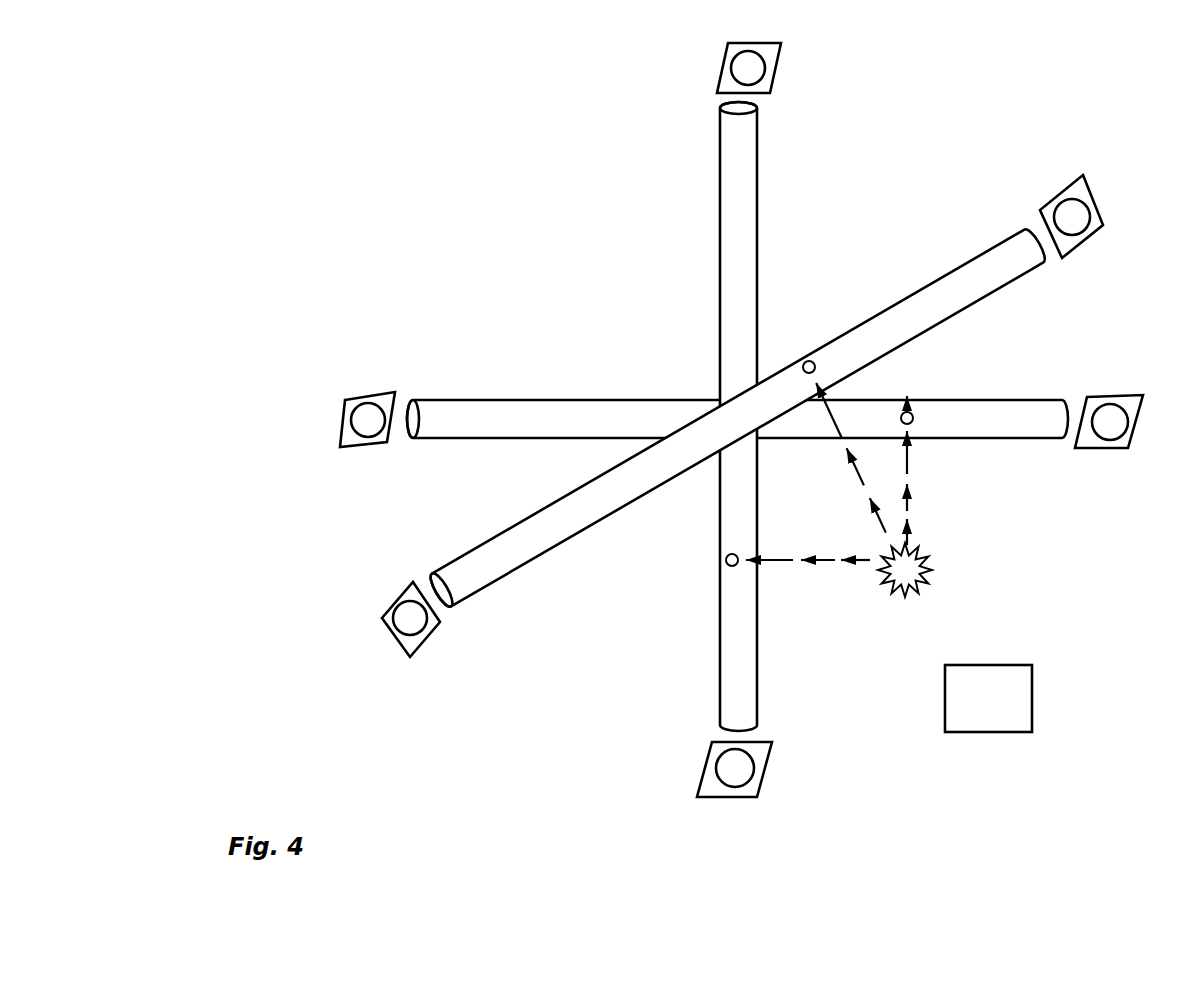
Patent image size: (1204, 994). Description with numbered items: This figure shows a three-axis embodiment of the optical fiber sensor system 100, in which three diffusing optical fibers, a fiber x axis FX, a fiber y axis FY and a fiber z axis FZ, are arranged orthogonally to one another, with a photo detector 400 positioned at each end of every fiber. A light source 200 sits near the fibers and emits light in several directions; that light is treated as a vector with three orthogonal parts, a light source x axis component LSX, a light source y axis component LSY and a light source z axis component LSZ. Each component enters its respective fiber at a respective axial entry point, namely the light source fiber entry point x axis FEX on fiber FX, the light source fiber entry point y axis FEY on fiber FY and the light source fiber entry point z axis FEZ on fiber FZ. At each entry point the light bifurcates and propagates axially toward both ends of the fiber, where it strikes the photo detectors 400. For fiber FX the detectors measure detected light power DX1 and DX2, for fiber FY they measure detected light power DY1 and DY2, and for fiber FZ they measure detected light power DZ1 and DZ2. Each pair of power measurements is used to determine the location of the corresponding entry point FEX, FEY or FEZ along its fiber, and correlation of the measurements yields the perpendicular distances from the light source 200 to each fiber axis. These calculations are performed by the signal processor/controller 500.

The optical fiber sensor system 100 is at (358, 104).
The light source 200 is at (925, 591).
The photo detector 400 is at (702, 421).
The signal processor/controller 500 is at (1032, 697).
The fiber X axis FX is at (468, 378).
The fiber Y axis FY is at (973, 251).
The fiber Z axis FZ is at (769, 129).
The light source fiber entry point X axis FEX is at (908, 398).
The light source fiber entry point Y axis FEY is at (799, 359).
The light source fiber entry point Z axis FEZ is at (722, 568).
The light source X axis component LSX is at (914, 494).
The light source Y axis component LSY is at (842, 492).
The light source Z axis component LSZ is at (802, 572).
The detected light power X1 DX1 is at (368, 420).
The detected light power X2 DX2 is at (1110, 422).
The detected light power Y1 DY1 is at (410, 618).
The detected light power Y2 DY2 is at (1072, 217).
The detected light power Z1 DZ1 is at (747, 67).
The detected light power Z2 DZ2 is at (735, 768).